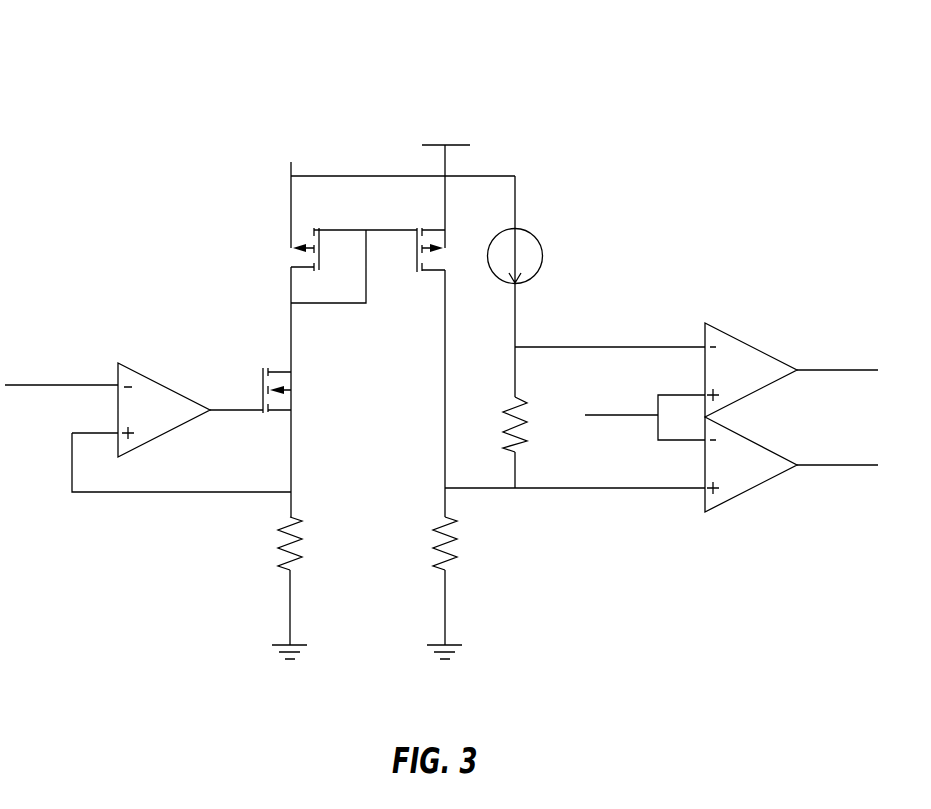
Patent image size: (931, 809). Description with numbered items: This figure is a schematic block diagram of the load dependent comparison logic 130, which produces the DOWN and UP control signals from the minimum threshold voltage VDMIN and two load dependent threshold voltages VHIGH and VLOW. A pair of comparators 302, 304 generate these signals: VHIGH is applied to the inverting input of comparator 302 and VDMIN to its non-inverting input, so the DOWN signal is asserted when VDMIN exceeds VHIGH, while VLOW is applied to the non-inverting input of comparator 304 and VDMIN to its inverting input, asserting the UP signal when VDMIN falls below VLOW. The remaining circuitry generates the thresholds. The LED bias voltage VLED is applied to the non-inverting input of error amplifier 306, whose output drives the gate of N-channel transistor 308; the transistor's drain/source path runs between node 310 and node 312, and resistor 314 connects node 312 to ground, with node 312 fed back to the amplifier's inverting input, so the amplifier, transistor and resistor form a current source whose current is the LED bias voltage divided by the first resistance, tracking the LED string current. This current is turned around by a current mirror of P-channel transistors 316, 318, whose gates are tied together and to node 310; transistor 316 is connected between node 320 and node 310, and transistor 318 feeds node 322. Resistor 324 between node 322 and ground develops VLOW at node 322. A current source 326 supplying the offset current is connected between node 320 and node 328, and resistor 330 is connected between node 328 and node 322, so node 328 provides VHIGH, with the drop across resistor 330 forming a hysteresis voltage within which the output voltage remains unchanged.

The load dependent comparison logic 130 is at (785, 100).
The comparator 302 is at (750, 343).
The comparator 304 is at (750, 490).
The error amplifier 306 is at (158, 435).
The N-channel transistor 308 is at (292, 390).
The node 310 is at (291, 322).
The node 312 is at (291, 480).
The resistor 314 is at (302, 558).
The P-channel transistor 316 is at (293, 248).
The P-channel transistor 318 is at (438, 230).
The node 320 is at (291, 162).
The node 322 is at (445, 490).
The resistor 324 is at (457, 558).
The current source 326 is at (530, 232).
The node 328 is at (517, 345).
The resistor 330 is at (527, 424).